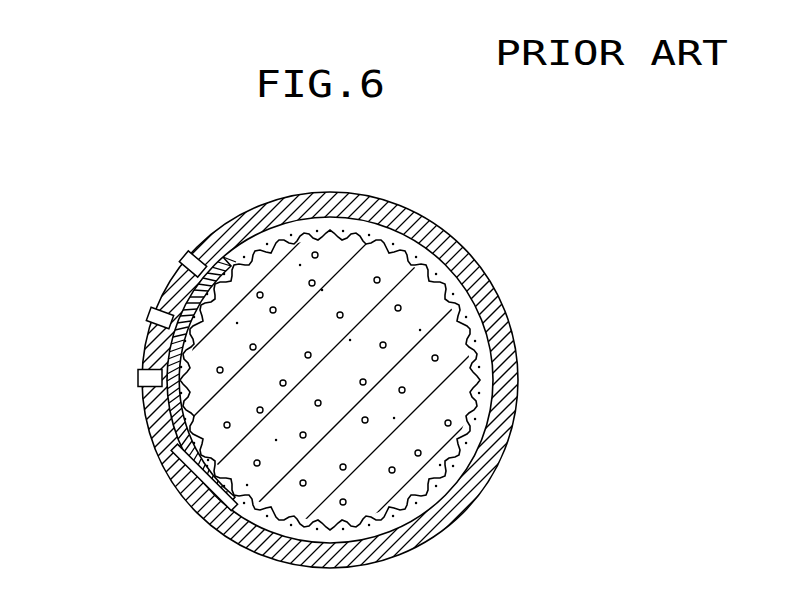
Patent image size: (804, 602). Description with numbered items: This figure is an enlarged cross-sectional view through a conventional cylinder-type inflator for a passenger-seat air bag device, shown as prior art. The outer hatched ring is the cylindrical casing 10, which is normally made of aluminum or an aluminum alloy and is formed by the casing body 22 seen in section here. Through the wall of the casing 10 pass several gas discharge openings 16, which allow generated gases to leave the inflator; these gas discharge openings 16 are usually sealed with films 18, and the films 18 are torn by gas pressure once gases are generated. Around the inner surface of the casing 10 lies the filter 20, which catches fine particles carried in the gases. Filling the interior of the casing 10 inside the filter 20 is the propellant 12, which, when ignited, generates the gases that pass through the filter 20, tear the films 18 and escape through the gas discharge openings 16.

The casing 10 is at (402, 370).
The propellant 12 is at (360, 290).
The gas discharge openings 16 is at (183, 263).
The films 18 is at (173, 355).
The filter 20 is at (263, 241).
The casing body 22 is at (487, 281).